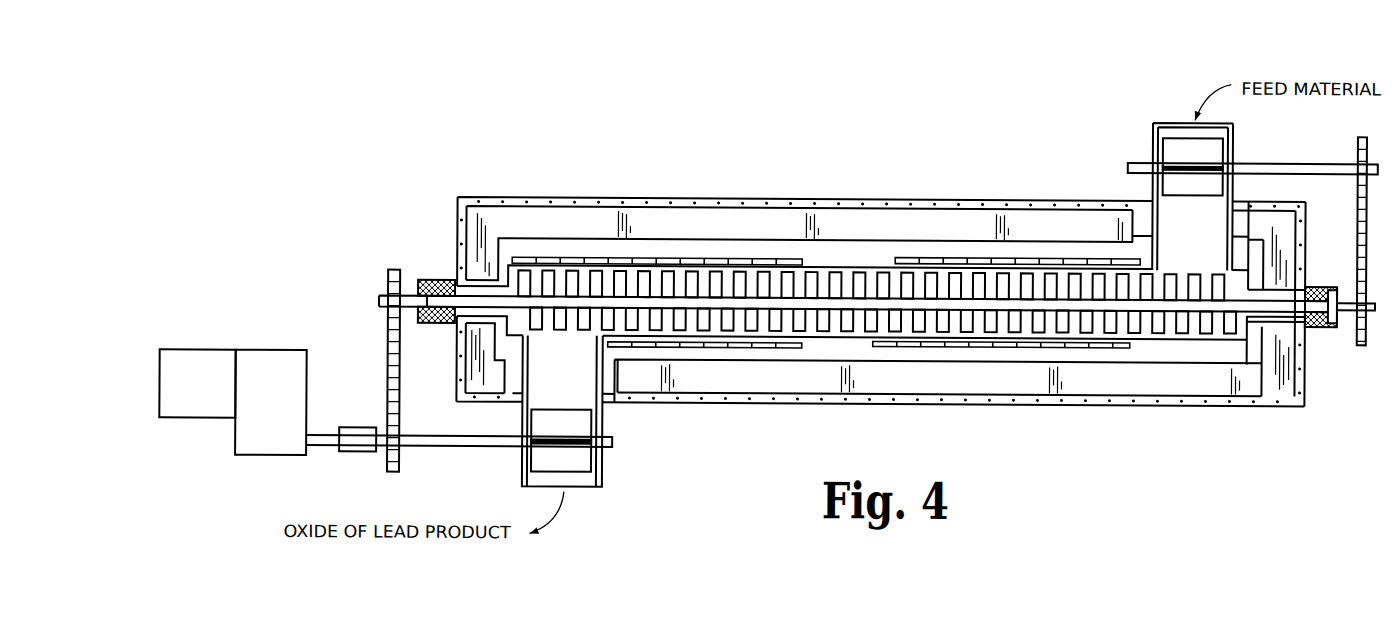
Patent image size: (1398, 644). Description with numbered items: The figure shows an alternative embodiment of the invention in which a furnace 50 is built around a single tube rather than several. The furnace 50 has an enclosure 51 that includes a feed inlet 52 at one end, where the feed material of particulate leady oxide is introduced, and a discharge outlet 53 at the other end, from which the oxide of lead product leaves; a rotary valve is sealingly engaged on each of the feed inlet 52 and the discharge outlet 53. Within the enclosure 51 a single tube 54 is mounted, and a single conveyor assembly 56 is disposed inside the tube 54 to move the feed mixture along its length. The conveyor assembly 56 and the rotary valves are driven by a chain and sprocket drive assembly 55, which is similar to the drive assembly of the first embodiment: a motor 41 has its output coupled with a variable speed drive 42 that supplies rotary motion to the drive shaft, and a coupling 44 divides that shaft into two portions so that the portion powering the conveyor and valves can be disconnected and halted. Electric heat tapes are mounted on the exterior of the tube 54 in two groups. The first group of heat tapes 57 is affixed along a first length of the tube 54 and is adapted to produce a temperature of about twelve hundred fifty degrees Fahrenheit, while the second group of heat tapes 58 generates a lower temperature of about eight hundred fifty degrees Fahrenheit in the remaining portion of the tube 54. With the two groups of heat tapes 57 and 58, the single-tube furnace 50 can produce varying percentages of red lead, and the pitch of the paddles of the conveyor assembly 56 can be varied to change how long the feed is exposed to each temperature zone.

The motor 41 is at (196, 349).
The variable speed drive 42 is at (256, 349).
The coupling 44 is at (355, 426).
The furnace 50 is at (480, 190).
The enclosure 51 is at (450, 213).
The feed inlet 52 is at (1146, 186).
The discharge outlet 53 is at (606, 487).
The tube 54 is at (848, 255).
The chain and sprocket drive assembly 55 is at (356, 459).
The conveyor assembly 56 is at (482, 299).
The first group of heat tapes 57 is at (1032, 346).
The second group of heat tapes 58 is at (775, 347).